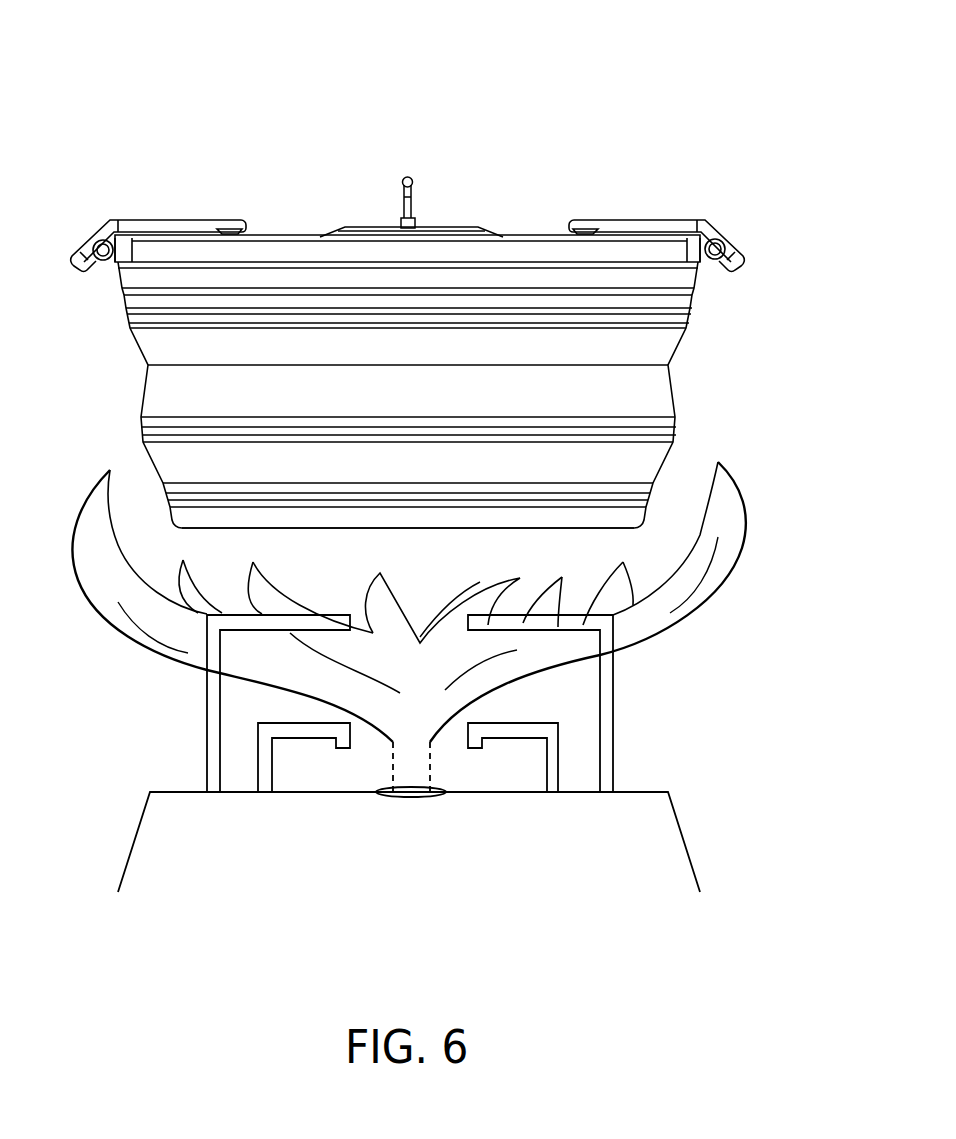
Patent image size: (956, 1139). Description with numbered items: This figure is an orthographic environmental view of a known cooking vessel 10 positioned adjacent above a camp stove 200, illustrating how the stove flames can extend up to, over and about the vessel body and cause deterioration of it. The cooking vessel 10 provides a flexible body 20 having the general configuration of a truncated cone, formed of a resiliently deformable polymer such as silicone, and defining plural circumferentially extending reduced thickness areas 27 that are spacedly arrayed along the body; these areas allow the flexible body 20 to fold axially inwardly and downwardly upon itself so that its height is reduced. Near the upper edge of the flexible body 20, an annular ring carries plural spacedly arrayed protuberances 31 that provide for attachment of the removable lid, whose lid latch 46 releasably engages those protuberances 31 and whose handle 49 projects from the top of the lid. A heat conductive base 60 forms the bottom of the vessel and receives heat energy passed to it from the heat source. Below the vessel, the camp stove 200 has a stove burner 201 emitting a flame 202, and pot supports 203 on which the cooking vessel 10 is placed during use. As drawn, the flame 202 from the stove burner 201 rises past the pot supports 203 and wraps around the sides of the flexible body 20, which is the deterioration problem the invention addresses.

The cooking vessel 10 is at (666, 108).
The flexible body 20 is at (158, 338).
The reduced thickness areas 27 is at (668, 364).
The protuberances 31 is at (705, 260).
The lid latch 46 is at (142, 220).
The handle 49 is at (412, 193).
The heat conductive base 60 is at (417, 518).
The camp stove 200 is at (689, 820).
The stove burner 201 is at (553, 698).
The flame 202 is at (718, 558).
The pot supports 203 is at (300, 613).